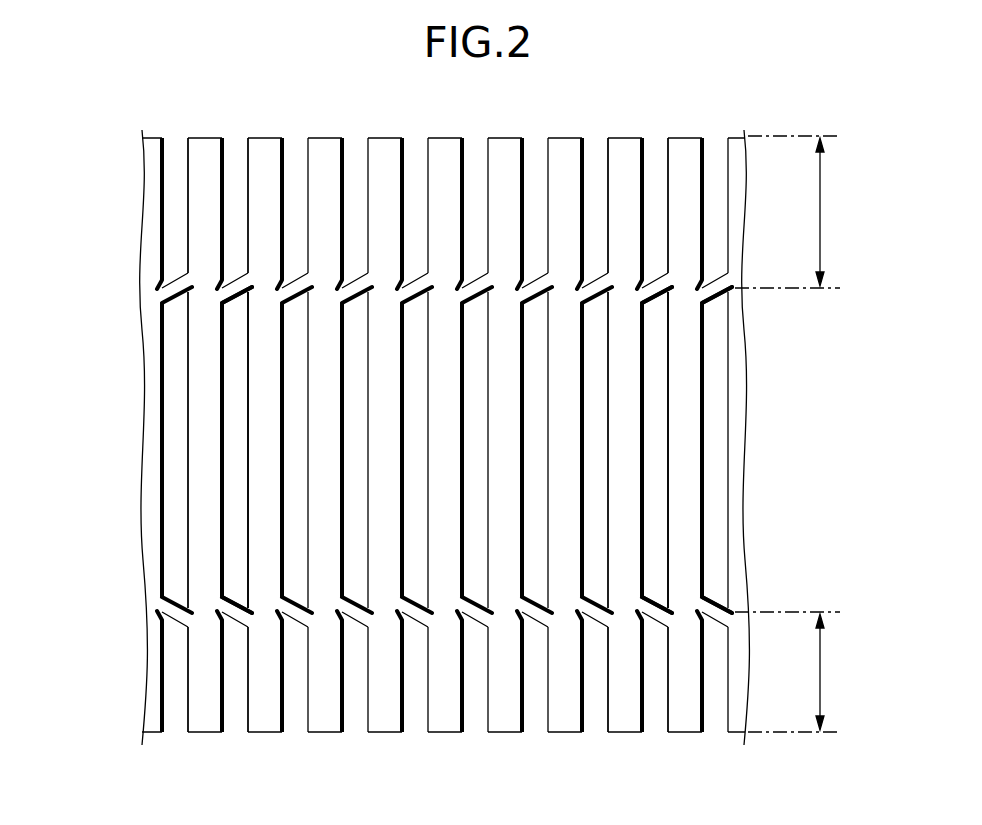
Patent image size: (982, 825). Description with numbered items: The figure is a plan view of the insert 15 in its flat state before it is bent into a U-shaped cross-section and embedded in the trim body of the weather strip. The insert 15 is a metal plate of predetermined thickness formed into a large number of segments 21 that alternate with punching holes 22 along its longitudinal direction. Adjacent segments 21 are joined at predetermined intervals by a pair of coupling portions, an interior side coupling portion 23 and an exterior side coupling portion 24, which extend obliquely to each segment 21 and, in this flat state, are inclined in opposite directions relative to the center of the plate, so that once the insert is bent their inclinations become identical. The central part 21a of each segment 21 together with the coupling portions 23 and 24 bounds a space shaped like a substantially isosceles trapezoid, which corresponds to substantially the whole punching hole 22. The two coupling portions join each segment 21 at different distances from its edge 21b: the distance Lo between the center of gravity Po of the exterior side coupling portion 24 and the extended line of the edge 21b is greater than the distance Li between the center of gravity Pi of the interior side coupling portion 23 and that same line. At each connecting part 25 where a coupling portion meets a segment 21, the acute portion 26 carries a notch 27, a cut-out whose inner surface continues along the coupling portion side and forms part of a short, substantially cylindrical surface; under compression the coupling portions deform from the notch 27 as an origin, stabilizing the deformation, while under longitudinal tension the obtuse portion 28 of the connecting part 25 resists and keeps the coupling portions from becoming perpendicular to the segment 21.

The insert 15 is at (508, 136).
The segment 21 is at (260, 138).
The central part of the segment 21a is at (205, 456).
The edge of the segment 21b is at (607, 138).
The punching hole 22 is at (655, 195).
The interior side coupling portion 23 is at (297, 607).
The exterior side coupling portion 24 is at (282, 296).
The connecting part 25 is at (248, 286).
The acute portion 26 is at (253, 297).
The notch 27 is at (222, 287).
The obtuse portion 28 is at (228, 289).
The center of gravity of the exterior side coupling portion Po is at (716, 288).
The center of gravity of the interior side coupling portion Pi is at (715, 613).
The distance between center of gravity Po and extended line of the edge Lo is at (794, 212).
The distance between center of gravity Pi and extended line of the edge Li is at (792, 672).